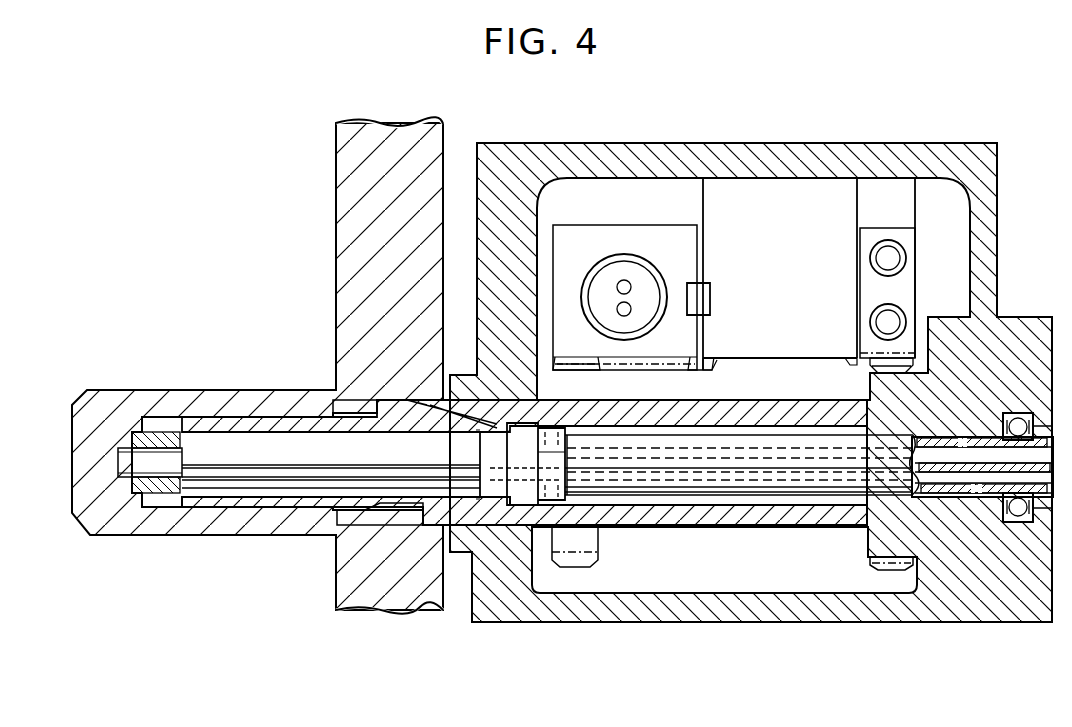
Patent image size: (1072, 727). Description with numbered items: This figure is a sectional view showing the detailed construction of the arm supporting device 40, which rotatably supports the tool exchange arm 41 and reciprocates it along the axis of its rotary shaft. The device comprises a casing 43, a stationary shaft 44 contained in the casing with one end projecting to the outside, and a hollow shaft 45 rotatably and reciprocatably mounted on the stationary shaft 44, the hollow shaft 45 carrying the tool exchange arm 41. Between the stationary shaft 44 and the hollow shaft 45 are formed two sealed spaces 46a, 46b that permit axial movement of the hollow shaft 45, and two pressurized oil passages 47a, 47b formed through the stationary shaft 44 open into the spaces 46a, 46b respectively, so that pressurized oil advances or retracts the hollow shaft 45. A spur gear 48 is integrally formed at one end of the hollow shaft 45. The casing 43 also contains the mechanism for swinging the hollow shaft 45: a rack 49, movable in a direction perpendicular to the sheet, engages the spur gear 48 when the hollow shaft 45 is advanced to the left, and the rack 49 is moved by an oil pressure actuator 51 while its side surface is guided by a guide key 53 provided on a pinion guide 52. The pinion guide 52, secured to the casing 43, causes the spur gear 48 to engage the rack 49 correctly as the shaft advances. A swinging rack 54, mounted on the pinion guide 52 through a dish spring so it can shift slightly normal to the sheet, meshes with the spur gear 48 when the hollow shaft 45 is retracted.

The arm supporting device 40 is at (1040, 139).
The tool exchange arm 41 is at (336, 268).
The casing 43 is at (985, 224).
The stationary shaft 44 is at (708, 487).
The hollow shaft 45 is at (617, 520).
The sealed space 46a is at (485, 507).
The sealed space 46b is at (773, 503).
The pressurized oil passage 47a is at (657, 477).
The pressurized oil passage 47b is at (781, 455).
The spur gear 48 is at (600, 360).
The rack 49 is at (673, 355).
The oil pressure actuator 51 is at (624, 272).
The pinion guide 52 is at (795, 186).
The guide key 53 is at (710, 292).
The swinging rack 54 is at (905, 290).